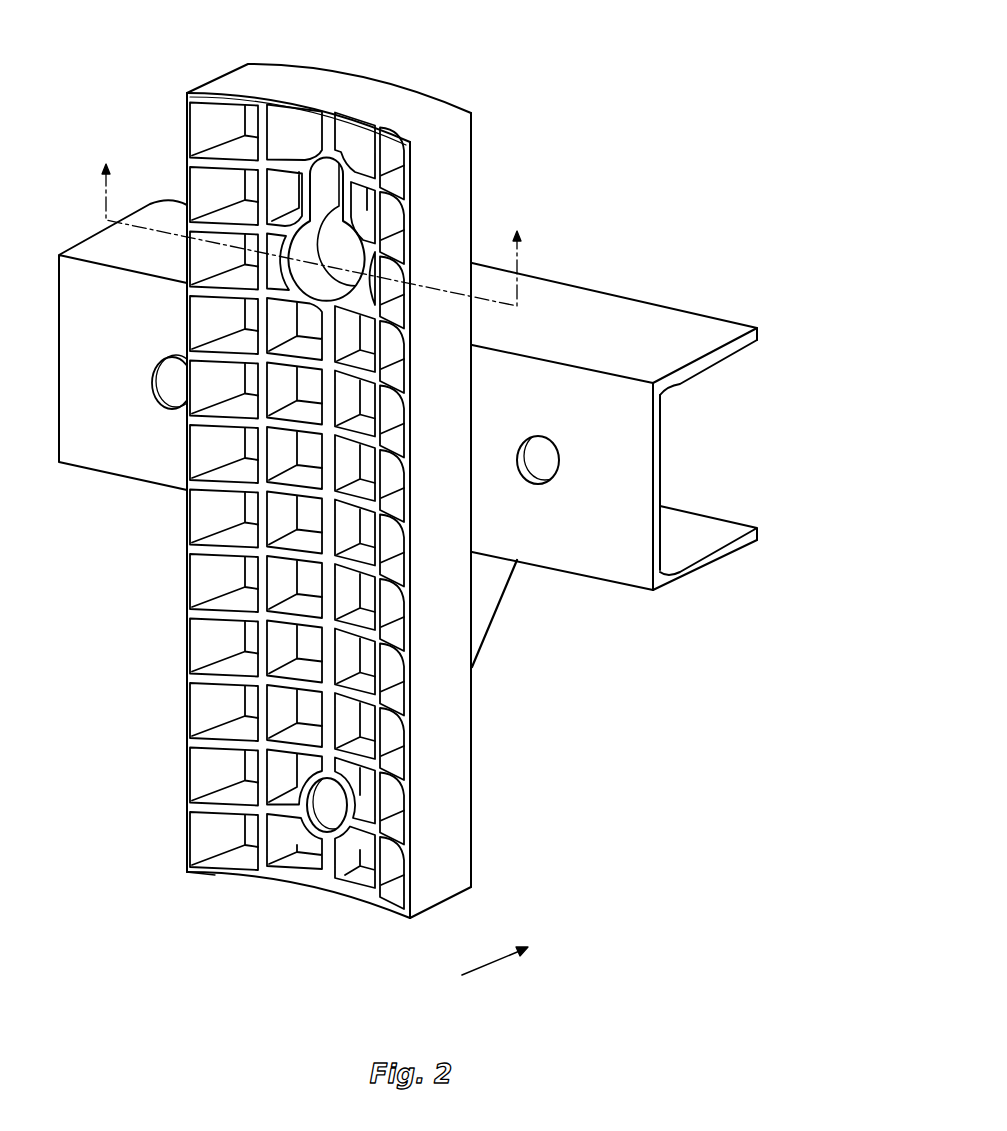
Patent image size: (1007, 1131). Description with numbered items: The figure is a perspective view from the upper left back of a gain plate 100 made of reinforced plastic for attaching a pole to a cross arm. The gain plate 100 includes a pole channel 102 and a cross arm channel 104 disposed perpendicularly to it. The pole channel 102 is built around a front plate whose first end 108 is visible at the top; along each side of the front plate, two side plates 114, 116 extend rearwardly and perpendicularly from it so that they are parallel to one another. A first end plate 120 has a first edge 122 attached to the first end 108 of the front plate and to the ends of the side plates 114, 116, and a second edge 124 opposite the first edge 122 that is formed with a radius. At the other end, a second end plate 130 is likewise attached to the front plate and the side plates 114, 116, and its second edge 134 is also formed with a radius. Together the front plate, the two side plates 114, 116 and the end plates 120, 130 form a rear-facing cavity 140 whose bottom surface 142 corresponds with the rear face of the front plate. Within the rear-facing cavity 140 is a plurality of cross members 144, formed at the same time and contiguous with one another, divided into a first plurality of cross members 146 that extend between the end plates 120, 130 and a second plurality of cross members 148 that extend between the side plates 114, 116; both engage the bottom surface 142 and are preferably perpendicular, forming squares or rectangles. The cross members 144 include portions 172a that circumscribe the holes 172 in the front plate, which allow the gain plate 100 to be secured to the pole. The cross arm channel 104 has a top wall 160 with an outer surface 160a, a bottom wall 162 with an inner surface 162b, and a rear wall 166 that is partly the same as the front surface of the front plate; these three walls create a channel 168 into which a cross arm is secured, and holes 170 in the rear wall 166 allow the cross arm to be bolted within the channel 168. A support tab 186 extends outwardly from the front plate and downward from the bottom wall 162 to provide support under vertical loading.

The gain plate 100 is at (653, 121).
The pole channel 102 is at (496, 792).
The cross arm channel 104 is at (735, 563).
The first end 108 is at (471, 113).
The side plate 114 is at (455, 887).
The side plate 116 is at (190, 836).
The first end plate 120 is at (258, 78).
The first edge 122 is at (378, 90).
The second edge 124 is at (312, 100).
The second end plate 130 is at (295, 882).
The second edge 134 is at (218, 880).
The rear-facing cavity 140 is at (224, 768).
The bottom surface 142 is at (310, 708).
The cross members 144 is at (247, 650).
The first plurality of cross members 146 is at (377, 603).
The second plurality of cross members 148 is at (420, 778).
The top wall 160 is at (627, 356).
The outer surface 160a is at (735, 330).
The bottom wall 162 is at (668, 593).
The inner surface 162b is at (740, 520).
The rear wall 166 is at (627, 466).
The channel 168 is at (690, 464).
The holes 170 is at (545, 489).
The holes 172 is at (338, 218).
The portions 172a is at (352, 829).
The support tabs 186 is at (502, 603).